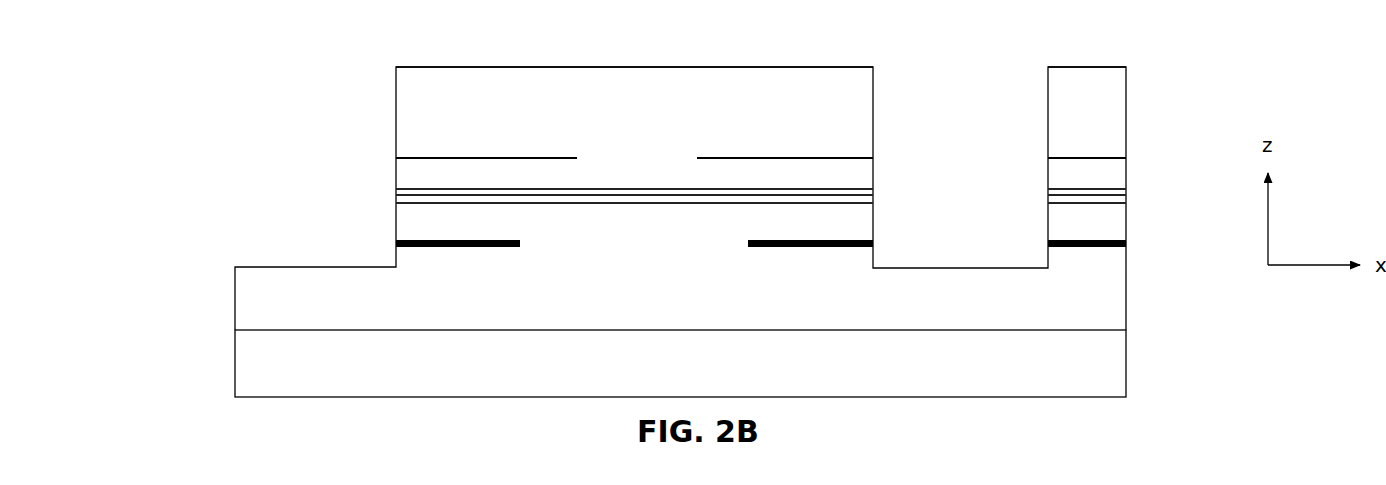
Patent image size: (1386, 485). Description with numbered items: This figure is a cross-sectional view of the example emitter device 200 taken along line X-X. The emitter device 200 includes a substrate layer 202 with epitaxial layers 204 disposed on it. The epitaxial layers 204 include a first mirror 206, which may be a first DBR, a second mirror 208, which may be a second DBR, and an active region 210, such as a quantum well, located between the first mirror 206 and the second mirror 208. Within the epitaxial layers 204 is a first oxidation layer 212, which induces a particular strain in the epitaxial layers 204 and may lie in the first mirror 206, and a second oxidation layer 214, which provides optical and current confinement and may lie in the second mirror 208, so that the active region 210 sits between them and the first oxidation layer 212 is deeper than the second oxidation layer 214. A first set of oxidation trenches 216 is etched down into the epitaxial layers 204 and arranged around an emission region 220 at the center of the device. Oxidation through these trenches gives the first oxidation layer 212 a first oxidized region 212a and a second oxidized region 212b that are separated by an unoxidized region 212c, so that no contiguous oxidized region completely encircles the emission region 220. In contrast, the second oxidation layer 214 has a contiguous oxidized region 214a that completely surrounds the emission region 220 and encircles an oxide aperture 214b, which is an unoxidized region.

The emitter device 200 is at (254, 35).
The substrate layer 202 is at (688, 375).
The epitaxial layers 204 is at (1135, 67).
The first mirror 206 is at (412, 263).
The second mirror 208 is at (404, 97).
The active region 210 is at (397, 196).
The first oxidation layer 212 is at (659, 291).
The first oxidized region 212a is at (396, 240).
The second oxidized region 212b is at (876, 247).
The unoxidized region 212c is at (730, 243).
The second oxidation layer 214 is at (397, 158).
The oxidized region 214a is at (453, 157).
The oxide aperture 214b is at (631, 138).
The first set of oxidation trenches 216 is at (283, 192).
The emission region 220 is at (640, 49).